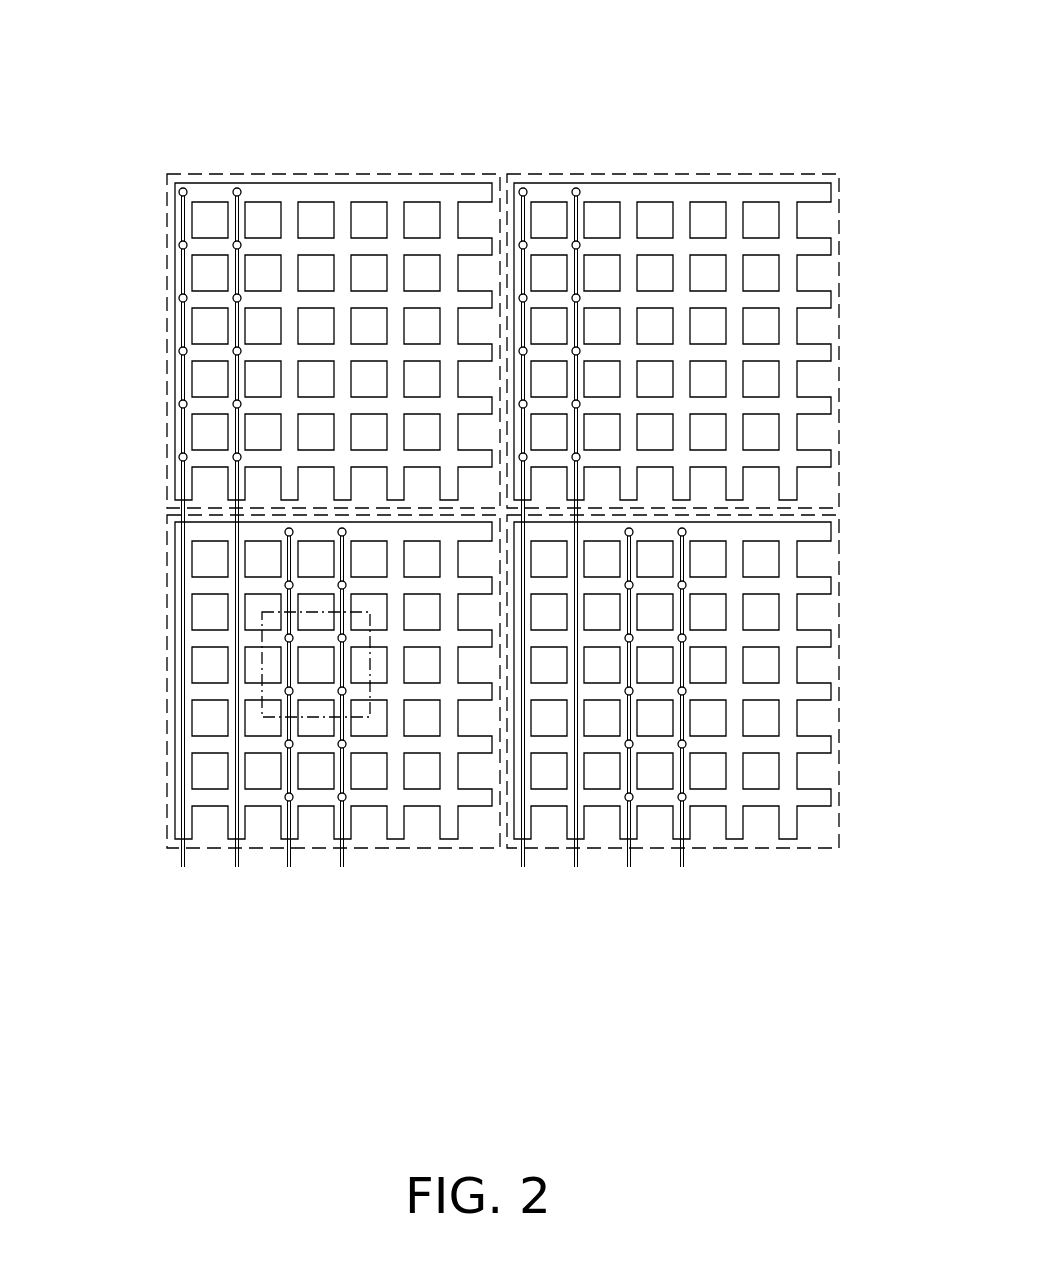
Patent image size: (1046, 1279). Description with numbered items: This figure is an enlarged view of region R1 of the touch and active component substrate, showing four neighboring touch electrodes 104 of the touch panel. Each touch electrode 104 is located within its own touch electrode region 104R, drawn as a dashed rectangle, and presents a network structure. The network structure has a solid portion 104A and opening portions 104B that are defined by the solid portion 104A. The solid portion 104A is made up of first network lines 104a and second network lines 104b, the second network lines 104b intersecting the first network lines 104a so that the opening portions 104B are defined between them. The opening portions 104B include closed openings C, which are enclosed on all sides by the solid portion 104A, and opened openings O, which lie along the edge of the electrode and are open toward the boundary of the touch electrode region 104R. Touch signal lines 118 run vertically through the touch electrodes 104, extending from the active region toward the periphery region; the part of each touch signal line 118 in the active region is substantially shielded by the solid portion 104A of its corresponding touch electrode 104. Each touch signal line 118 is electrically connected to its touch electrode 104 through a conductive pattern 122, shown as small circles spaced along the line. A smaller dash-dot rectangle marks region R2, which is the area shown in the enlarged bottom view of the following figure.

The touch electrode 104 is at (442, 53).
The solid portion 104A is at (368, 102).
The opening portions 104B is at (467, 102).
The first network lines 104a is at (290, 218).
The second network lines 104b is at (320, 245).
The closed openings C is at (416, 212).
The opened openings O is at (471, 212).
The touch electrode region 104R is at (167, 332).
The touch signal lines 118 is at (183, 853).
The conductive pattern 122 is at (285, 584).
The region R1 is at (888, 991).
The region R2 is at (262, 672).